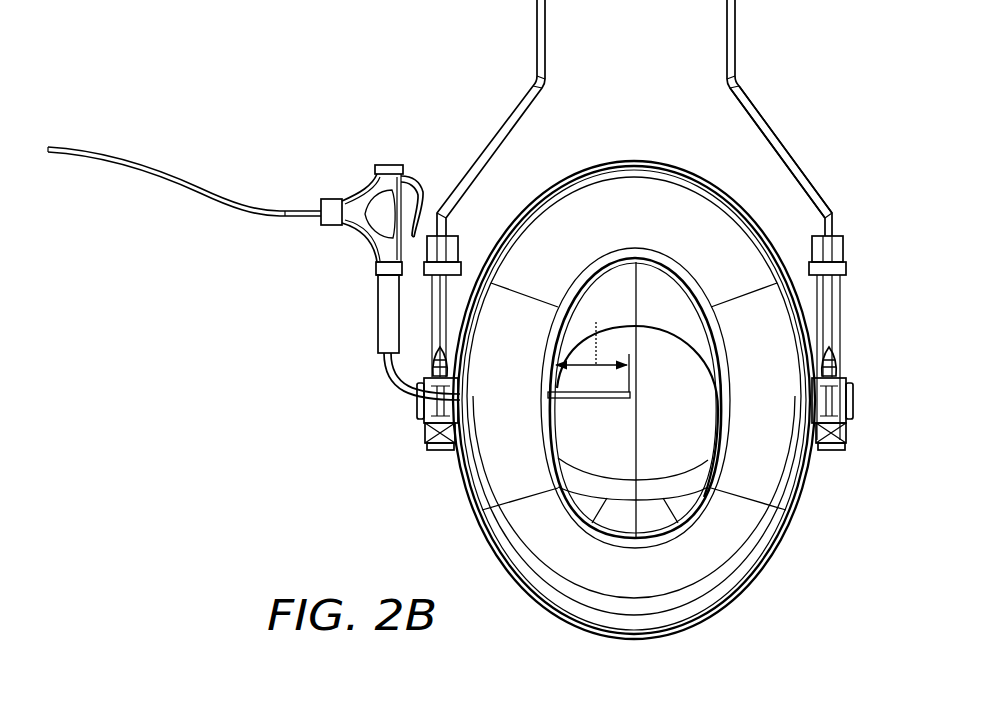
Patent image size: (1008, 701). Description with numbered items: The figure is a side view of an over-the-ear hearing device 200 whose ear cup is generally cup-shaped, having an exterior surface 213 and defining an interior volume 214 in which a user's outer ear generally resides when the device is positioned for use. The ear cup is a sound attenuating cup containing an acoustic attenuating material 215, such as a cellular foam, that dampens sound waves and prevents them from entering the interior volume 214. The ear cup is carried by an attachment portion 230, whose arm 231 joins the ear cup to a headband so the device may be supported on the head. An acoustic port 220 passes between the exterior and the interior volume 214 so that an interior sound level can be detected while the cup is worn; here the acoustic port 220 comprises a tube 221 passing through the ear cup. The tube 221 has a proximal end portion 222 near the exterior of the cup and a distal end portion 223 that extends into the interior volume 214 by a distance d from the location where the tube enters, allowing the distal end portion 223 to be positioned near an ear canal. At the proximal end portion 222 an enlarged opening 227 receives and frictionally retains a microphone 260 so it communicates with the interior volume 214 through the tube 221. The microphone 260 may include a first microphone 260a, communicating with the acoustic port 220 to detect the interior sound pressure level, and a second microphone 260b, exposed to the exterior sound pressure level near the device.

The over-the-ear hearing device 200 is at (347, 44).
The exterior surface 213 is at (792, 548).
The interior volume 214 is at (685, 503).
The acoustic attenuating material 215 is at (669, 302).
The acoustic port 220 is at (444, 452).
The tube 221 is at (372, 379).
The proximal end portion 222 is at (412, 398).
The distal end portion 223 is at (605, 399).
The enlarged opening 227 is at (378, 316).
The attachment portion 230 is at (846, 231).
The arm 231 is at (782, 140).
The microphone 260 is at (356, 185).
The first microphone 260a is at (368, 265).
The second microphone 260b is at (397, 164).